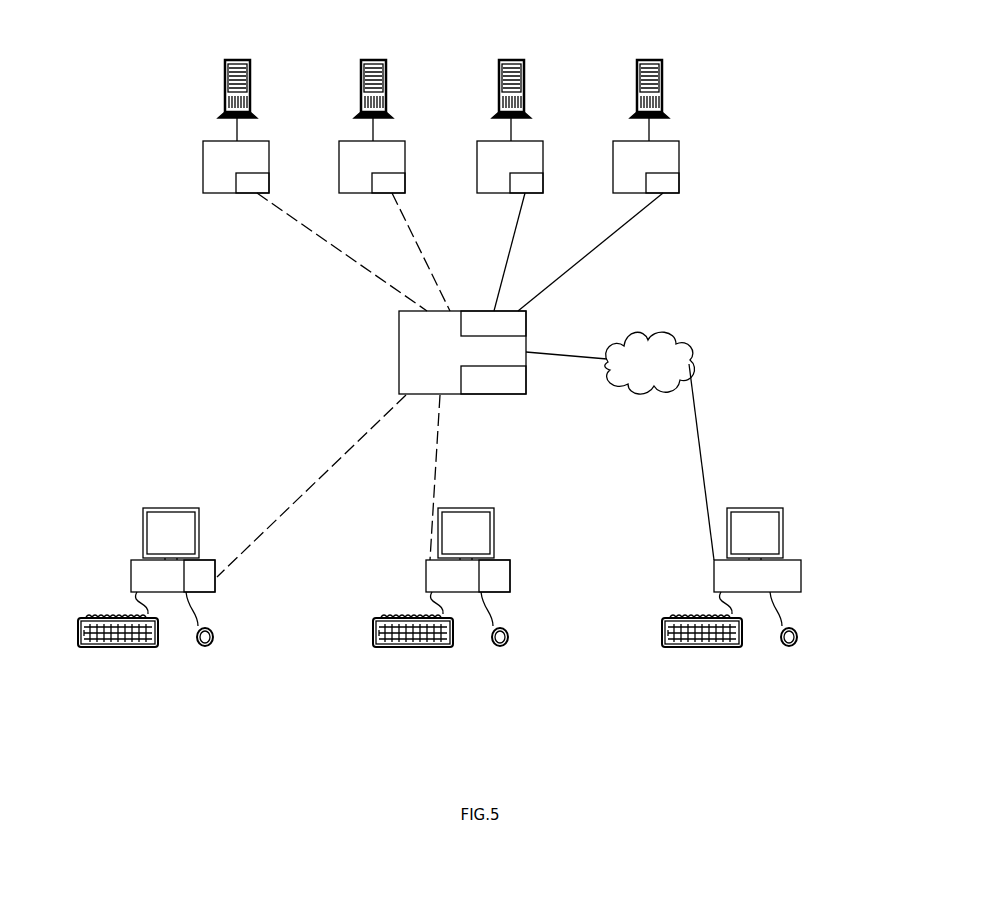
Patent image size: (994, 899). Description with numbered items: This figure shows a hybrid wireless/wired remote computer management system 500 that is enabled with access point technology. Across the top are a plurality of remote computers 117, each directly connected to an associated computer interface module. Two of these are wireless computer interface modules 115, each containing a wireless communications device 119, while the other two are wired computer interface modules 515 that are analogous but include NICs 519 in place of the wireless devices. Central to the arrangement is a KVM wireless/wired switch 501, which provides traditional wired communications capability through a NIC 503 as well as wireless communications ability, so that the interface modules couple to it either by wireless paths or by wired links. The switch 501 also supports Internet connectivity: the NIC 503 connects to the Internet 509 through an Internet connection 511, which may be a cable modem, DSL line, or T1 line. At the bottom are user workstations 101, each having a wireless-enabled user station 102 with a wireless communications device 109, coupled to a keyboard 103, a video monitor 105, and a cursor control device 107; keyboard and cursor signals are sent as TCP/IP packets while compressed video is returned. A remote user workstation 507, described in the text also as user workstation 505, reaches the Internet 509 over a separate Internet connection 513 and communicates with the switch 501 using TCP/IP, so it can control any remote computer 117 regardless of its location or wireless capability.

The hybrid wireless/wired remote computer management system 500 is at (131, 247).
The remote computer 117 is at (236, 57).
The wireless computer interface module (WCIM) 115 is at (304, 167).
The wireless communications device 119 is at (320, 183).
The wired computer interface module (CIM) 515 is at (578, 167).
The NIC 519 is at (594, 183).
The KVM wireless/wired switch 501 is at (462, 352).
The NIC 503 is at (493, 323).
The user workstation 505 is at (493, 380).
The Internet 509 is at (650, 363).
The Internet connection 511 is at (564, 361).
The Internet connection 513 is at (712, 443).
The user workstation 101 is at (110, 558).
The video monitor 105 is at (463, 534).
The wireless-enabled user station (WUST) 102 is at (320, 576).
The wireless communications device 109 is at (347, 576).
The user workstation 507 is at (757, 576).
The keyboard 103 is at (100, 654).
The cursor control device 107 is at (203, 654).